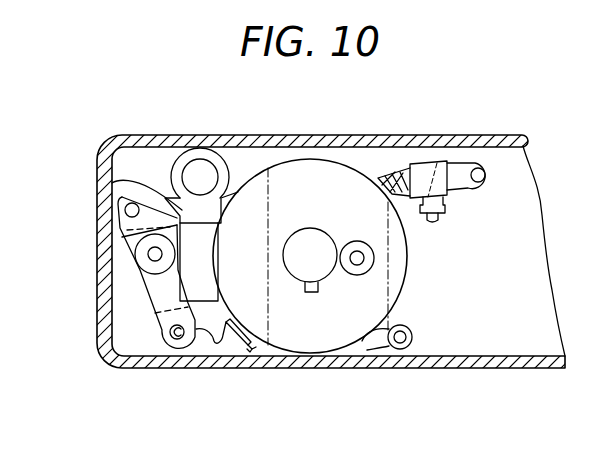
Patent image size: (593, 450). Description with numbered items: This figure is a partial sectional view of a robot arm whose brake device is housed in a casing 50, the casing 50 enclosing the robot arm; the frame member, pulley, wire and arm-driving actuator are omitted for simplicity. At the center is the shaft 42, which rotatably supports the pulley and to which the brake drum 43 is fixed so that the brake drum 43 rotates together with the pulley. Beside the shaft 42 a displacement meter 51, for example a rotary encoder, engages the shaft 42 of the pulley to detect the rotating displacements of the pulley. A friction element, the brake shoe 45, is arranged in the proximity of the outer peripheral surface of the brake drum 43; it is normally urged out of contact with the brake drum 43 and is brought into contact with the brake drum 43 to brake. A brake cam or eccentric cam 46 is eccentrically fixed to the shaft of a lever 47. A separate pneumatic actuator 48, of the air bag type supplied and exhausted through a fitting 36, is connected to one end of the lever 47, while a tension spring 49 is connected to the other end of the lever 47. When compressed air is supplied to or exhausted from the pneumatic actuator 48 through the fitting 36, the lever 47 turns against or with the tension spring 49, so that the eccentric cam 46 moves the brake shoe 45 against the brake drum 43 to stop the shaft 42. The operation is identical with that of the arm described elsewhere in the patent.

The fitting 36 is at (441, 215).
The shaft 42 is at (310, 250).
The brake drum 43 is at (400, 299).
The brake shoe 45 is at (112, 183).
The eccentric cam 46 is at (140, 280).
The lever 47 is at (152, 313).
The pneumatic actuator 48 is at (392, 170).
The tension spring 49 is at (239, 345).
The casing 50 is at (398, 368).
The displacement meter 51 is at (374, 262).